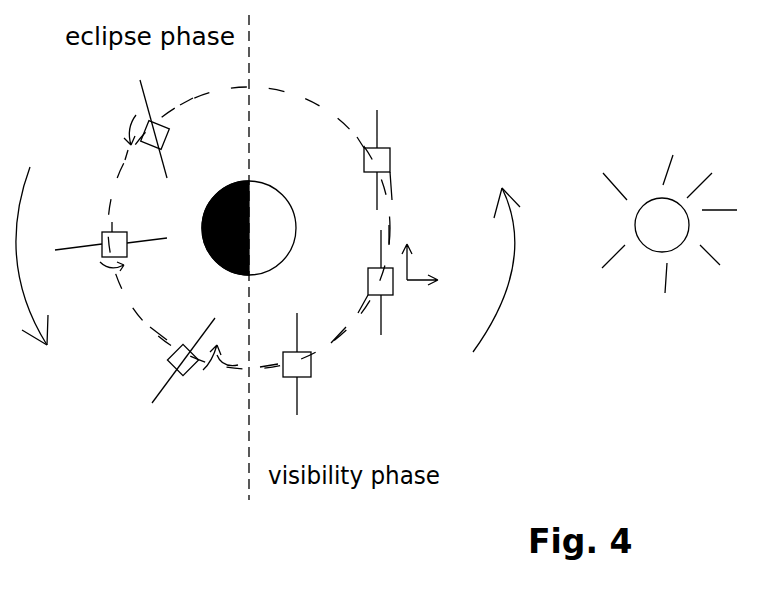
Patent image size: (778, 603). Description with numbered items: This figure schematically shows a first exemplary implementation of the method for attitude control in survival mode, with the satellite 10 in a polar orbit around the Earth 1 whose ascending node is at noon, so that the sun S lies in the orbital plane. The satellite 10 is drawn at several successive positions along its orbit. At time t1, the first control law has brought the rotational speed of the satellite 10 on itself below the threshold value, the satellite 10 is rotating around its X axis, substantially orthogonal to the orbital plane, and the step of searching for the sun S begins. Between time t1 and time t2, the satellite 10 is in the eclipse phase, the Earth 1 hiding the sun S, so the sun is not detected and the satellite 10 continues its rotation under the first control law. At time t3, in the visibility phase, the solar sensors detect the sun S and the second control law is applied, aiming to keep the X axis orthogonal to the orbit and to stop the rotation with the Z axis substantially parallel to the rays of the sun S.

The satellite 10 is at (262, 247).
The Earth 1 is at (262, 184).
The sun S is at (688, 227).
The time t1 is at (167, 135).
The time t2 is at (170, 352).
The time t3 is at (308, 364).